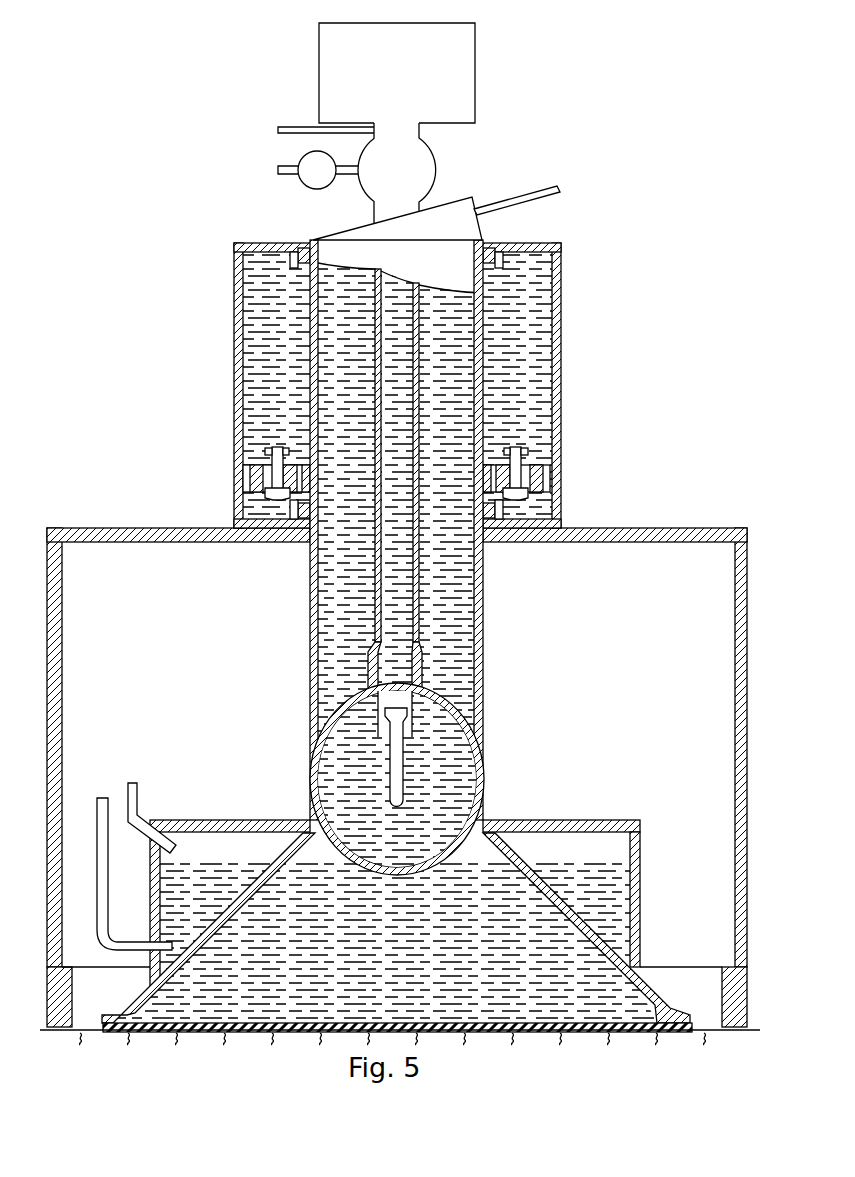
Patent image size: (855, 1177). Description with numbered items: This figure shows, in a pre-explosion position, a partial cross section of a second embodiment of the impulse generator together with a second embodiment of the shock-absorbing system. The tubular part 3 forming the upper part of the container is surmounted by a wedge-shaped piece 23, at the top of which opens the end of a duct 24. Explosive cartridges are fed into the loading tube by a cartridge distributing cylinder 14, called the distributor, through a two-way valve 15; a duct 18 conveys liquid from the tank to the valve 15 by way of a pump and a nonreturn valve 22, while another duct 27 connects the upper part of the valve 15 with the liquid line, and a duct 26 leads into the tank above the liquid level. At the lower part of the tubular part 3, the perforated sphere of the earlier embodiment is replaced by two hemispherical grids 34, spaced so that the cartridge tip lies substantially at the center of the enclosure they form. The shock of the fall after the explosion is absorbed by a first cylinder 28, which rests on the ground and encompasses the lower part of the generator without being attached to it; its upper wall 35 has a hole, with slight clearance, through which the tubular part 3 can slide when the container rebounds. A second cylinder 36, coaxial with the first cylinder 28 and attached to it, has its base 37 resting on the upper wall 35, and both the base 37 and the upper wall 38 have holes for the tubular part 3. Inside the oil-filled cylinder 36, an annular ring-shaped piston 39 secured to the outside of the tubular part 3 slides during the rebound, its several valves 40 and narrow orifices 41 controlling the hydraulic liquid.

The cartridge distributing cylinder 14 is at (463, 36).
The duct 27 is at (290, 128).
The duct 18 is at (285, 169).
The two-way valve 15 is at (417, 158).
The nonreturn valve 22 is at (318, 187).
The duct 24 is at (560, 192).
The wedge-shaped piece 23 is at (473, 230).
The upper wall 38 is at (550, 245).
The second cylinder 36 is at (418, 375).
The narrow orifices 41 is at (394, 473).
The annular ring-shaped piston 39 is at (250, 482).
The valves 40 is at (273, 489).
The base 37 is at (550, 526).
The upper wall 35 is at (618, 537).
The first cylinder 28 is at (670, 555).
The tubular part 3 is at (428, 557).
The hemispherical grids 34 is at (453, 703).
The duct 26 is at (132, 798).